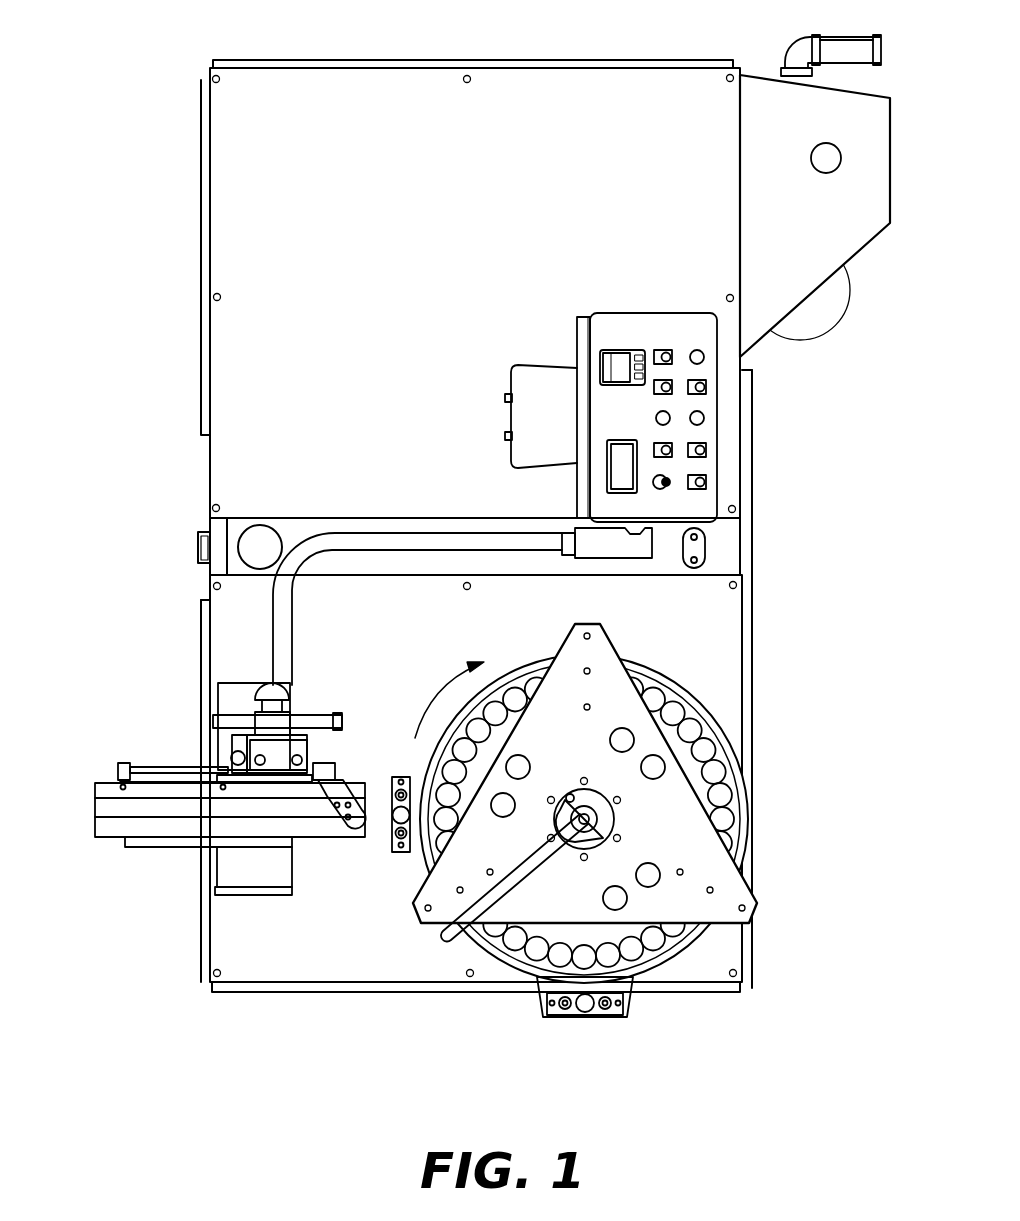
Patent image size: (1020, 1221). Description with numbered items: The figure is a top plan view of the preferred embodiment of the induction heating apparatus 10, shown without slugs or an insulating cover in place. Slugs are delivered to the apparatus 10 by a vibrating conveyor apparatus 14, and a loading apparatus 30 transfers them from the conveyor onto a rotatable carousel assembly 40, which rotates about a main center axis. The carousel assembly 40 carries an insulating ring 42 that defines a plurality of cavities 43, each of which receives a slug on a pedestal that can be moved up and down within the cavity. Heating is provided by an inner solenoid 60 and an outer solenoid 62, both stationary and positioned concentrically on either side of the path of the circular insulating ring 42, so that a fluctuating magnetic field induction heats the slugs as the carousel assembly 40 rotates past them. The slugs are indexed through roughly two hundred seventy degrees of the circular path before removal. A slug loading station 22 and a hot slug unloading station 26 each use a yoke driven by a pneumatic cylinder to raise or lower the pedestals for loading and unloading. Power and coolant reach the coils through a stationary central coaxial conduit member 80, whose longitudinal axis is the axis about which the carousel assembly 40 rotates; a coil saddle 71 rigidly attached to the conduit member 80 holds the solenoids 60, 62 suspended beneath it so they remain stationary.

The apparatus 10 is at (122, 415).
The vibrating conveyor apparatus 14 is at (100, 862).
The slug loading station 22 is at (395, 842).
The hot slug unloading station 26 is at (595, 1017).
The loading apparatus 30 is at (345, 813).
The rotatable carousel assembly 40 is at (653, 859).
The insulating ring 42 is at (683, 697).
The cavities 43 is at (703, 738).
The inner solenoid 60 is at (500, 962).
The outer solenoid 62 is at (462, 940).
The coil saddle 71 is at (705, 867).
The conduit member 80 is at (590, 820).